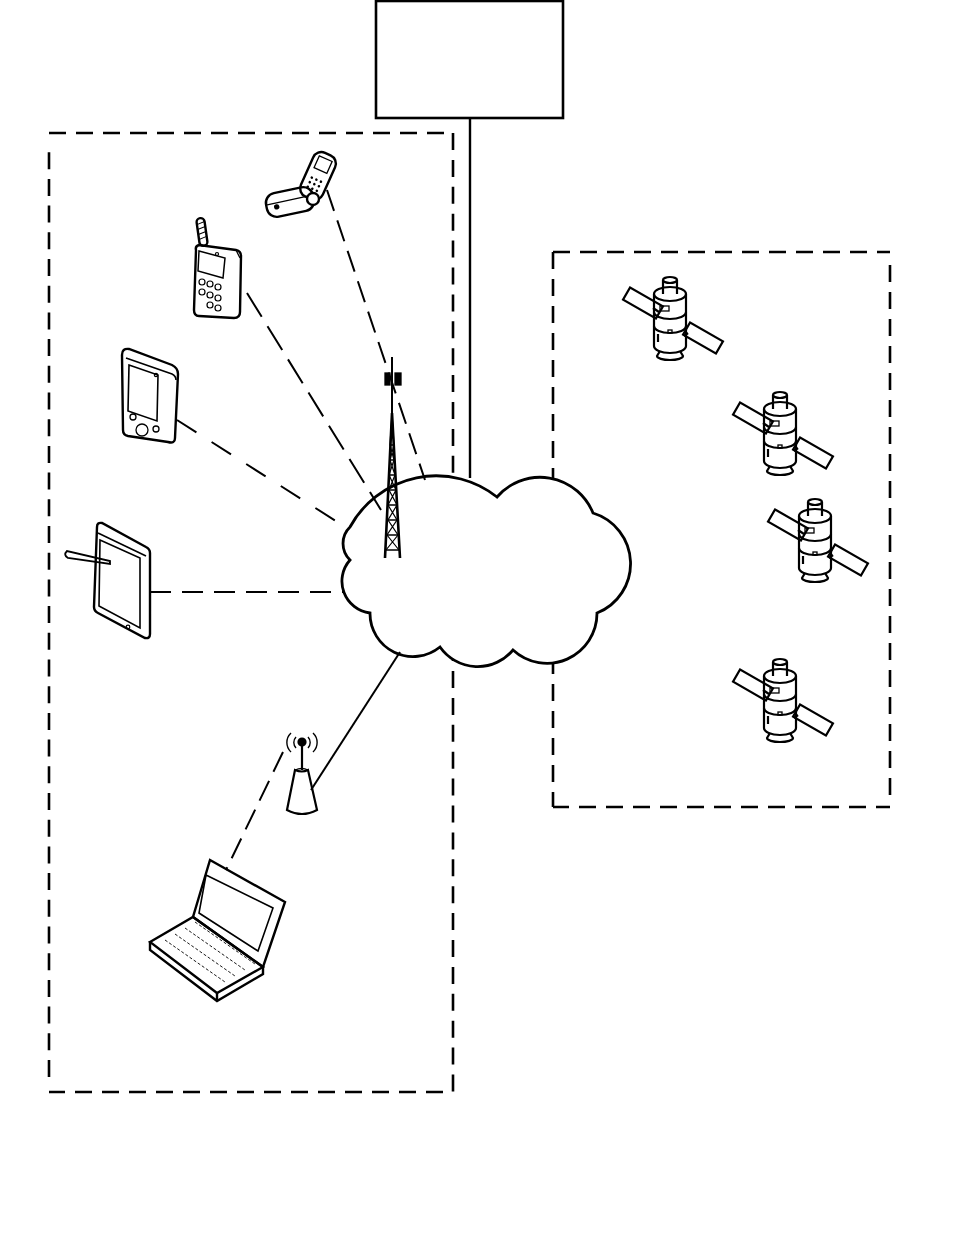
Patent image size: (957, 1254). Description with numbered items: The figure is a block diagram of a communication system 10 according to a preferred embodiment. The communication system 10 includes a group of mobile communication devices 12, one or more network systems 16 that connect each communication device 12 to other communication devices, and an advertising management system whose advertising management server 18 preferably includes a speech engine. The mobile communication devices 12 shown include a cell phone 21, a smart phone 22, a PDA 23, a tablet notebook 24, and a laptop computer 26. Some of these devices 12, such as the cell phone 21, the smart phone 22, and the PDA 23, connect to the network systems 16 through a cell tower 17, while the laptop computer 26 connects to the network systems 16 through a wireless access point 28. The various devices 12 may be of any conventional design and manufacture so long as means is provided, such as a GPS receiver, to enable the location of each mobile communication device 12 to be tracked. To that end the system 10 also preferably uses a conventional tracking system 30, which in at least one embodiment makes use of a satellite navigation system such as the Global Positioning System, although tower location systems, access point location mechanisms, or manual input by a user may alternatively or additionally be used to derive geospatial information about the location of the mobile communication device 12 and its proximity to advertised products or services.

The communication system 10 is at (78, 31).
The mobile communication device 12 is at (94, 166).
The network systems 16 is at (549, 527).
The cell tower 17 is at (392, 413).
The advertising management server 18 is at (423, 31).
The cell phone 21 is at (283, 195).
The smart phone 22 is at (195, 248).
The PDA 23 is at (147, 352).
The tablet notebook 24 is at (122, 530).
The laptop computer 26 is at (185, 980).
The wireless access point 28 is at (305, 815).
The tracking system 30 is at (867, 283).